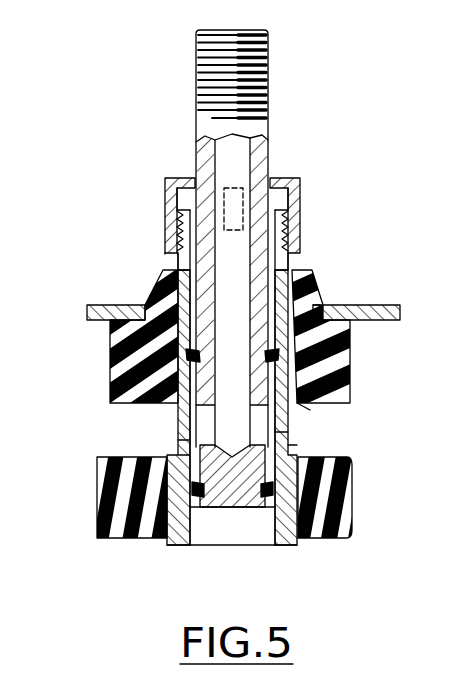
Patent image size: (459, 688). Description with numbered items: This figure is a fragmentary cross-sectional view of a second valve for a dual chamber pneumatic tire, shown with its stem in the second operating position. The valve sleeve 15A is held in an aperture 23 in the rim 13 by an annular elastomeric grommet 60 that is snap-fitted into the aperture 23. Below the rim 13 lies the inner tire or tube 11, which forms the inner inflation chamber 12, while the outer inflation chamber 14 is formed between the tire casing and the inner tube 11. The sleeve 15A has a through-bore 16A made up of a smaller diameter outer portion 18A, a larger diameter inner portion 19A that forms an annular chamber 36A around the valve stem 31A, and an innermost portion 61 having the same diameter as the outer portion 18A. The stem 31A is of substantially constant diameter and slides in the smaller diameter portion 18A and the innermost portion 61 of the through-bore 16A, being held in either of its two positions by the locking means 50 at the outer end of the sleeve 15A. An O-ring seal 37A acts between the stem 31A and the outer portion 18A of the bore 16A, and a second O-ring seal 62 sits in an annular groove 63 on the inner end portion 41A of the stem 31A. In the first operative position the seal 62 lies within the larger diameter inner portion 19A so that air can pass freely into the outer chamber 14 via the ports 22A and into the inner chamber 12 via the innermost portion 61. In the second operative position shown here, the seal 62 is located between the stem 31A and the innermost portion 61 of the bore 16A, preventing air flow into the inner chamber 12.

The inner tire or tube 11 is at (135, 538).
The inflation chamber 12 is at (238, 589).
The rim 13 is at (97, 323).
The inflation chamber 14 is at (415, 440).
The valve sleeve 15A is at (293, 263).
The through-bore 16A is at (187, 422).
The smaller diameter outer portion 18A is at (195, 267).
The larger diameter inner portion 19A is at (310, 410).
The ports 22A is at (275, 432).
The aperture 23 is at (320, 306).
The valve stem 31A is at (261, 171).
The annular chamber 36A is at (300, 444).
The 'O' ring seal 37A is at (188, 355).
The inner end portion 41A is at (246, 510).
The locking means 50 is at (304, 206).
The annular elastomeric grommet 60 is at (345, 355).
The innermost portion 61 is at (270, 546).
The second 'O' ring seal 62 is at (195, 490).
The annular groove 63 is at (270, 495).